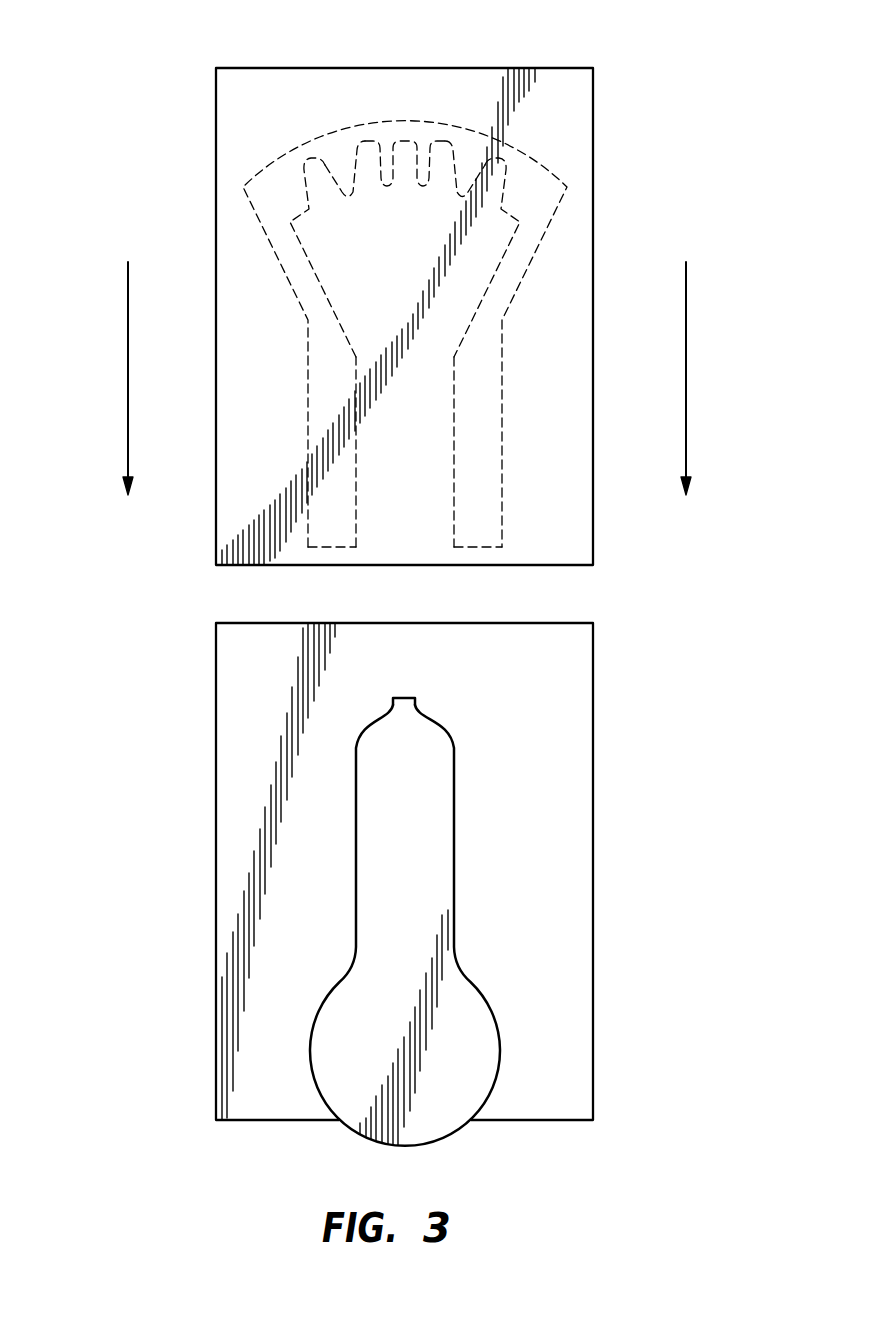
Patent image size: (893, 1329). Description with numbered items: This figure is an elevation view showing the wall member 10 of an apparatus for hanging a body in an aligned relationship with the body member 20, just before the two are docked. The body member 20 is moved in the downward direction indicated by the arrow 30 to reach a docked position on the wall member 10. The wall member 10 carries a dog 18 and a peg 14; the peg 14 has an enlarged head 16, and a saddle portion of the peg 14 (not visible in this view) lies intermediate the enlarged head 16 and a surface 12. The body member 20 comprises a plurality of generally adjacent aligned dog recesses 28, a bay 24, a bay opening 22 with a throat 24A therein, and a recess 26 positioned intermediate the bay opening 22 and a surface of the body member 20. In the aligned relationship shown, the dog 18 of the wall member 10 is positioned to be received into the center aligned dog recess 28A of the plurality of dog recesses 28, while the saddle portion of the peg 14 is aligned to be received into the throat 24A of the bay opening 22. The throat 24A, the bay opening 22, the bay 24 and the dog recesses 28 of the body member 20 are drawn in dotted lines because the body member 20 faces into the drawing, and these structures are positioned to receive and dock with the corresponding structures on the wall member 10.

The wall member 10 is at (572, 717).
The surface 12 is at (572, 832).
The peg 14 is at (438, 1117).
The enlarged head 16 is at (485, 998).
The dog 18 is at (415, 698).
The body member 20 is at (572, 152).
The bay opening 22 is at (383, 532).
The bay 24 is at (407, 258).
The throat 24A is at (417, 540).
The recess 26 is at (478, 382).
The dog recesses 28 is at (350, 143).
The center aligned dog recess 28A is at (403, 137).
The arrow 30 is at (128, 417).